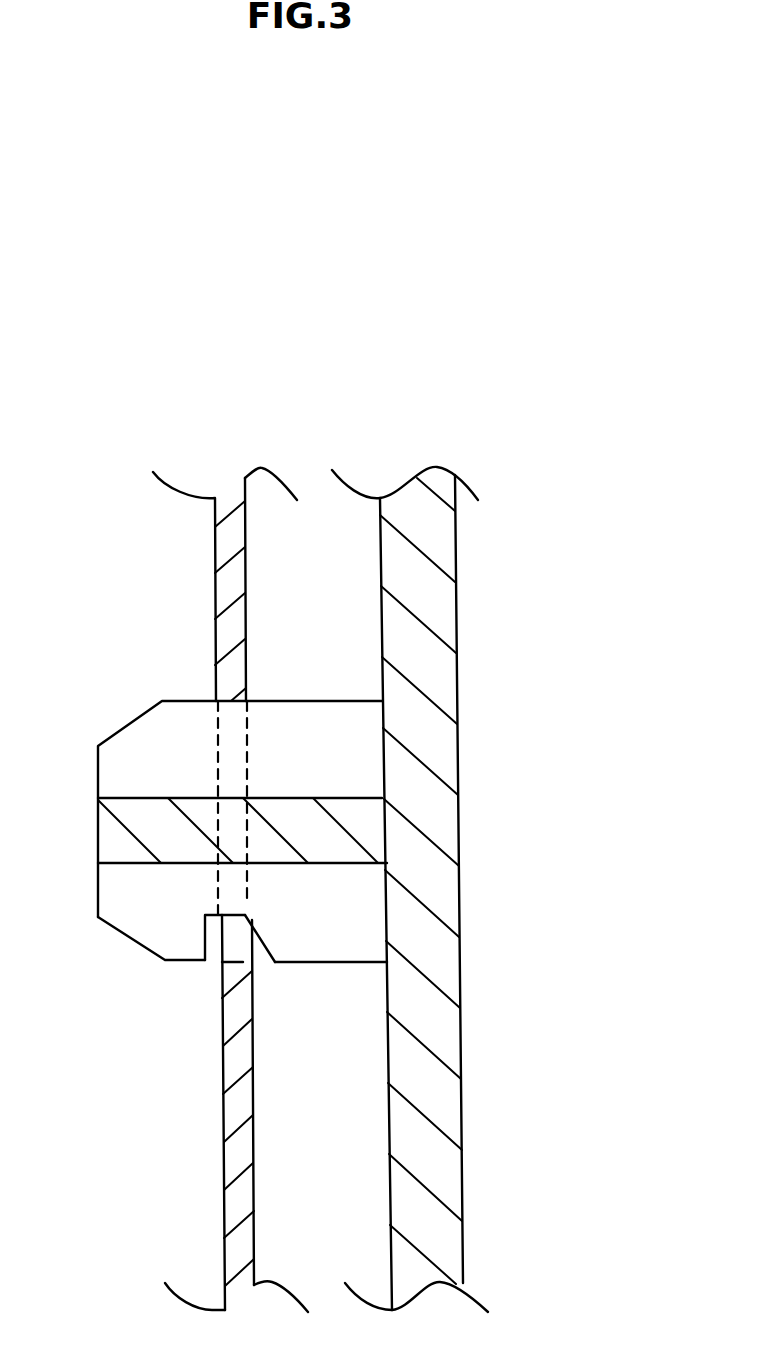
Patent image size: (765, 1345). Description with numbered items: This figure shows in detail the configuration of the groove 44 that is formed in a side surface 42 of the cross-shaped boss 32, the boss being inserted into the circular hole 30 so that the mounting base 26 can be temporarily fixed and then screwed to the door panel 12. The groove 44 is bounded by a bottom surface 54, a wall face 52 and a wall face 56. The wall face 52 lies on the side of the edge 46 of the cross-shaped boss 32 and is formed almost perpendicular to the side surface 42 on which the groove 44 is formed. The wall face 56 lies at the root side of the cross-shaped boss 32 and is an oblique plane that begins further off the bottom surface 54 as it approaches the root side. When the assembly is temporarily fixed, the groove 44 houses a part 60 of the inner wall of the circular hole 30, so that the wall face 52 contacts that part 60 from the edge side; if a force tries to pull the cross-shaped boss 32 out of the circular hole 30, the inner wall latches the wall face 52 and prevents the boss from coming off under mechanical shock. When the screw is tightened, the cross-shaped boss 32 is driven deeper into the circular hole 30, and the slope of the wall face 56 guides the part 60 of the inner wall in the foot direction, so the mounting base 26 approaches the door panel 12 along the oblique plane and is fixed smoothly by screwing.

The door panel 12 is at (215, 537).
The mounting base 26 is at (463, 562).
The circular hole 30 is at (247, 752).
The cross-shaped boss 32 is at (300, 694).
The side surface 42 is at (178, 963).
The groove 44 is at (273, 967).
The edge 46 is at (122, 728).
The wall face 52 is at (205, 937).
The bottom surface 54 is at (223, 915).
The wall face 56 is at (265, 938).
The part of the inner wall 60 is at (250, 927).